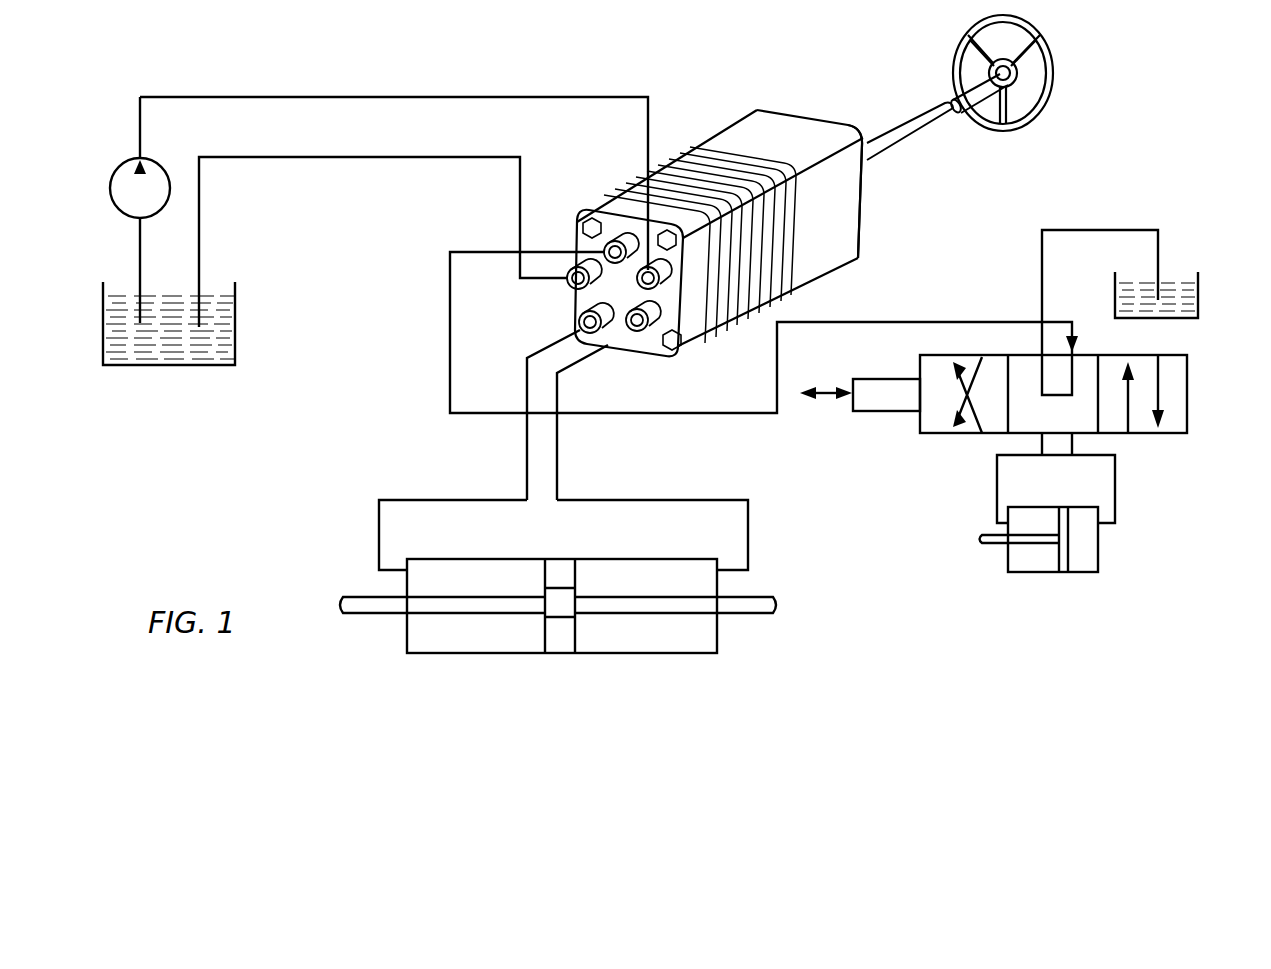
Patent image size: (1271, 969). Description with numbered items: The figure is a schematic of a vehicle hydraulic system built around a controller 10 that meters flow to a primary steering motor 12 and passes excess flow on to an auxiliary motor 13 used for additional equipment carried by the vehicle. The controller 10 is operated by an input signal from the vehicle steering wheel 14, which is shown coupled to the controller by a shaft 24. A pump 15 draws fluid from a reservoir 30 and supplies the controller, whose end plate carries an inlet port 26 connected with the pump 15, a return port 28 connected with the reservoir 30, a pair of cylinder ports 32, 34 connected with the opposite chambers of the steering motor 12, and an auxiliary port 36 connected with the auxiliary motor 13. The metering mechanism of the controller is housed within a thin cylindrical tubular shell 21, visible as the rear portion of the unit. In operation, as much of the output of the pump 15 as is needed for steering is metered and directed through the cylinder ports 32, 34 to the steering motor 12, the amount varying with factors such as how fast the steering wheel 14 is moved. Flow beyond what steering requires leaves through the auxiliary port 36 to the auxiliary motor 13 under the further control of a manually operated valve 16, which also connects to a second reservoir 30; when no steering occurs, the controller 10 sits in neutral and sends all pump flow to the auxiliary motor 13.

The controller 10 is at (775, 92).
The steering motor 12 is at (703, 673).
The auxiliary motor 13 is at (1135, 556).
The steering wheel 14 is at (1052, 82).
The pump 15 is at (98, 207).
The manually operated valve 16 is at (912, 447).
The cylindrical tubular shell 21 is at (858, 270).
The shaft 24 is at (880, 136).
The inlet port 26 is at (668, 292).
The return port 28 is at (566, 289).
The reservoir 30 is at (225, 330).
The cylinder port 32 is at (566, 328).
The cylinder port 34 is at (638, 342).
The auxiliary port 36 is at (613, 228).